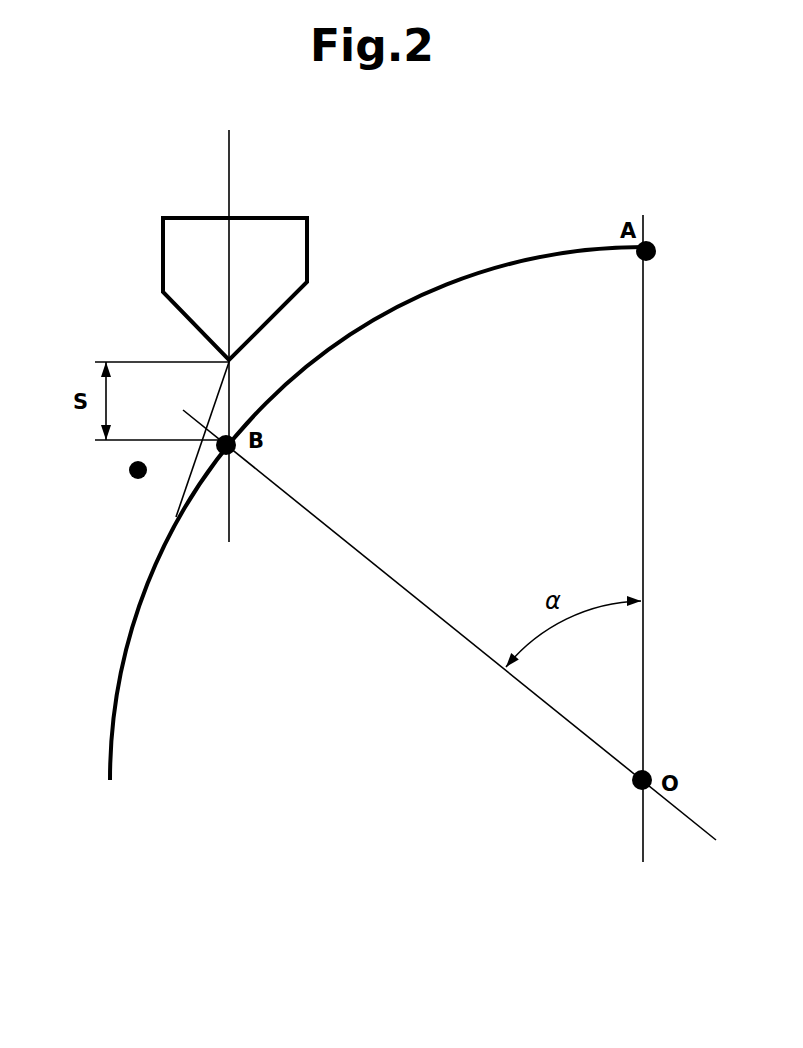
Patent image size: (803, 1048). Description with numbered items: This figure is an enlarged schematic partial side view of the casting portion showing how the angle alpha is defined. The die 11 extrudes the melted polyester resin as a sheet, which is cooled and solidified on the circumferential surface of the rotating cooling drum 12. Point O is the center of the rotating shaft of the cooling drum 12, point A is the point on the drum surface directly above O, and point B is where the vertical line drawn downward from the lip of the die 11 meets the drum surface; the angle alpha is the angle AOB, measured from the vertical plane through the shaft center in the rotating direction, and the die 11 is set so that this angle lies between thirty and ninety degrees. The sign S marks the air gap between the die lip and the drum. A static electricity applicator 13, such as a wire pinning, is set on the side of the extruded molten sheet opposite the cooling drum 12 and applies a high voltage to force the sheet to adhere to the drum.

The die 11 is at (270, 217).
The cooling drum 12 is at (540, 260).
The static electricity applicator 13 is at (128, 478).